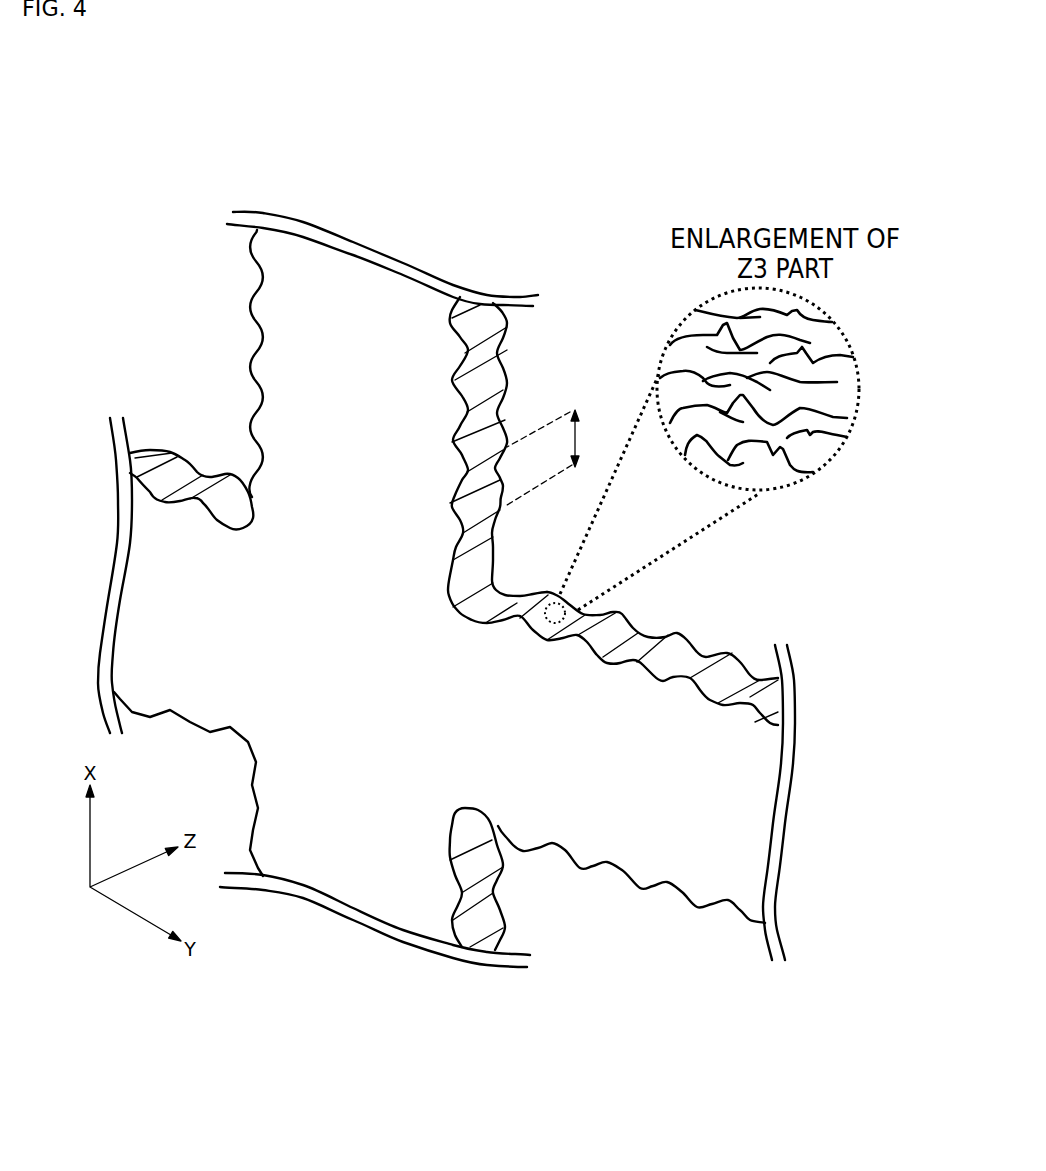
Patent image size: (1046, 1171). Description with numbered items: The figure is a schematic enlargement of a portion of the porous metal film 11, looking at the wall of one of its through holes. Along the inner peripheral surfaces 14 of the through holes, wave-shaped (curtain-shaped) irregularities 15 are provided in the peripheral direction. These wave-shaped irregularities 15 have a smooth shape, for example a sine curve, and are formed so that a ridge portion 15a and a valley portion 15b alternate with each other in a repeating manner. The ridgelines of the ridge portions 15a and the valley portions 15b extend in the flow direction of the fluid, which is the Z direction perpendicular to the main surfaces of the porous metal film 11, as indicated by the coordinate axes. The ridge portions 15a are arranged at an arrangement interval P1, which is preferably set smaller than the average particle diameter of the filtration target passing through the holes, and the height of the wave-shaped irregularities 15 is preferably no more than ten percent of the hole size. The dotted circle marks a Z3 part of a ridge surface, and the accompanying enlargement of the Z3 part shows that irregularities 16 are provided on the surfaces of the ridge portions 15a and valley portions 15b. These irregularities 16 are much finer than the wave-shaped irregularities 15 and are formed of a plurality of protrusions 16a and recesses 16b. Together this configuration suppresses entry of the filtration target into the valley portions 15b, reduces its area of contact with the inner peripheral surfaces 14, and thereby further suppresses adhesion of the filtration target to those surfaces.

The porous metal film 11 is at (290, 312).
The inner peripheral surface 14 is at (500, 408).
The wave-shaped irregularities 15 is at (707, 624).
The ridge portion 15a is at (677, 633).
The valley portion 15b is at (703, 655).
The irregularities 16 is at (708, 353).
The protrusion 16a is at (727, 353).
The recess 16b is at (730, 348).
The arrangement interval P1 is at (556, 457).
The Z3 part Z3 is at (547, 596).